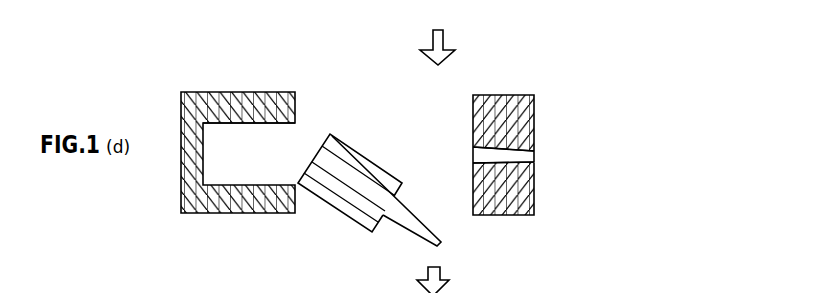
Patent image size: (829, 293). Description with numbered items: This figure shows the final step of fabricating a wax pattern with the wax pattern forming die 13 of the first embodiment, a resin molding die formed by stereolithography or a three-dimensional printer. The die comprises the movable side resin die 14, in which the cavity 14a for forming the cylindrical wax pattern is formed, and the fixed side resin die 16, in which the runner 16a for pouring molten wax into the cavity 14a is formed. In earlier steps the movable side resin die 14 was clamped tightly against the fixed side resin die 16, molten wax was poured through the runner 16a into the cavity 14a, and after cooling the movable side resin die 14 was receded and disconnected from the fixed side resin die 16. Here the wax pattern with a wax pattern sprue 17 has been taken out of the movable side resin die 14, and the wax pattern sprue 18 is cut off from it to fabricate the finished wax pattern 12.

The wax pattern forming die 13 is at (407, 16).
The movable side resin die 14 is at (308, 93).
The cavity 14a is at (268, 125).
The fixed side resin die 16 is at (473, 98).
The runner 16a is at (487, 148).
The wax pattern with a wax pattern sprue 17 is at (290, 232).
The wax pattern 12 is at (362, 226).
The wax pattern sprue 18 is at (410, 236).